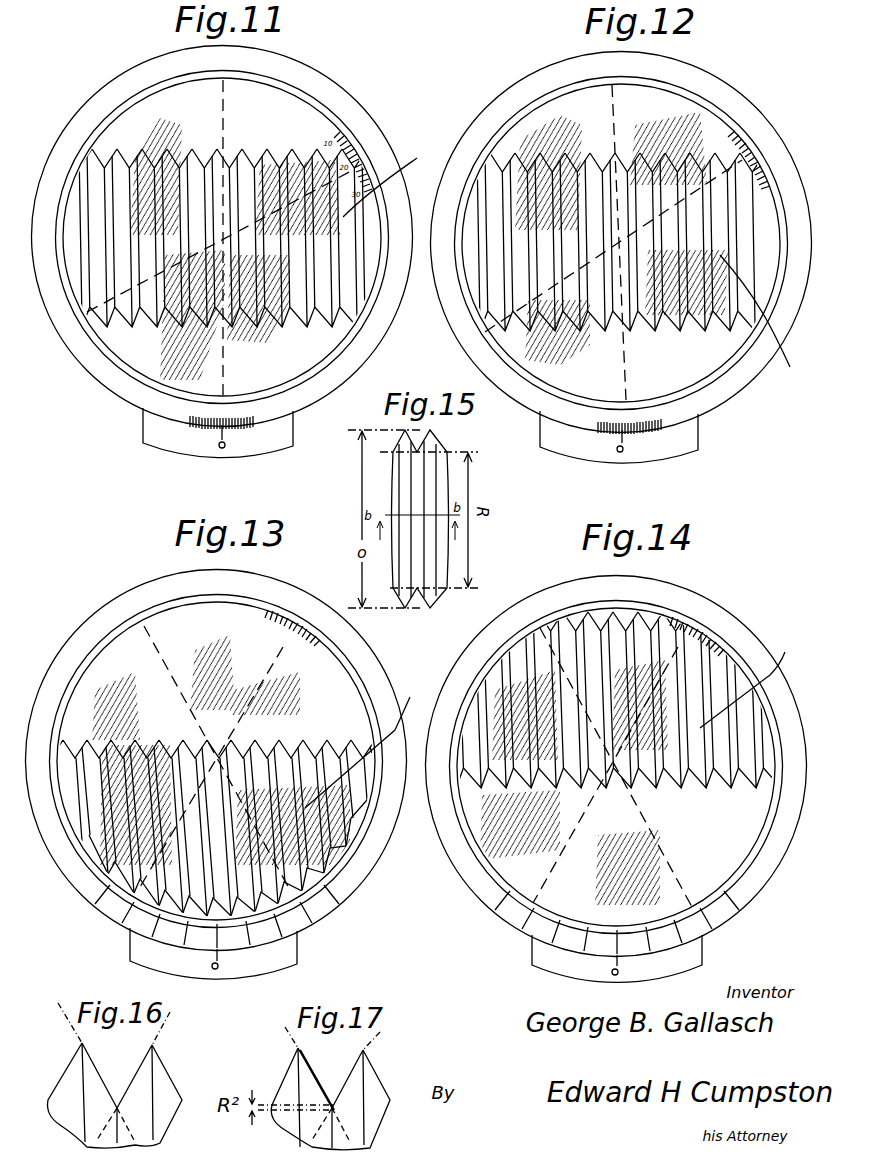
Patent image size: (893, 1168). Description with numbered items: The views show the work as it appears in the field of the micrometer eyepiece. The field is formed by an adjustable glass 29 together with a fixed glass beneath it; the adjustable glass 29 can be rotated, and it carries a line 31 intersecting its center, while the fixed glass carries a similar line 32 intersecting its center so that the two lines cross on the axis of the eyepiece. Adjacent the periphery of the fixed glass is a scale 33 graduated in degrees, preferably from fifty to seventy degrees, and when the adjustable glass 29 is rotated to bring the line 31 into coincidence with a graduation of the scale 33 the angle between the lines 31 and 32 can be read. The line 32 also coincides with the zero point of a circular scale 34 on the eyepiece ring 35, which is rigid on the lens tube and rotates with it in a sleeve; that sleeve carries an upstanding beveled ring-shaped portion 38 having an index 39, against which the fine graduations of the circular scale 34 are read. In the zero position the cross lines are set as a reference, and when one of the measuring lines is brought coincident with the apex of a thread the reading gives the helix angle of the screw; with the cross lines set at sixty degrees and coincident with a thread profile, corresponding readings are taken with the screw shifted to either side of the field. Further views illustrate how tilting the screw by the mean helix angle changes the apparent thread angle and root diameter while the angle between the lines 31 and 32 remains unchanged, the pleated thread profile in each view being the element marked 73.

In FIG. 11, the adjustable glass 29 is at (228, 249).
In FIG. 12, the adjustable glass 29 is at (614, 241).
In FIG. 13, the adjustable glass 29 is at (231, 775).
In FIG. 14, the adjustable glass 29 is at (626, 758).
In FIG. 11, the line 31 is at (322, 157).
In FIG. 12, the line 31 is at (706, 157).
In FIG. 13, the line 31 is at (277, 663).
In FIG. 14, the line 31 is at (560, 855).
In FIG. 16, the line 31 is at (176, 1029).
In FIG. 17, the line 31 is at (388, 1037).
In FIG. 11, the line 32 is at (228, 370).
In FIG. 12, the line 32 is at (622, 367).
In FIG. 13, the line 32 is at (160, 653).
In FIG. 14, the line 32 is at (652, 830).
In FIG. 16, the line 32 is at (54, 1024).
In FIG. 17, the line 32 is at (276, 1041).
In FIG. 12, the scale 33 is at (742, 158).
In FIG. 13, the scale 33 is at (320, 637).
In FIG. 14, the scale 33 is at (703, 640).
In FIG. 11, the circular scale 34 is at (258, 448).
In FIG. 12, the circular scale 34 is at (678, 452).
In FIG. 13, the circular scale 34 is at (115, 919).
In FIG. 14, the circular scale 34 is at (527, 920).
In FIG. 11, the eyepiece ring 35 is at (107, 380).
In FIG. 12, the eyepiece ring 35 is at (745, 382).
In FIG. 13, the eyepiece ring 35 is at (67, 857).
In FIG. 14, the eyepiece ring 35 is at (463, 863).
In FIG. 11, the beveled ring-shaped portion 38 is at (191, 447).
In FIG. 12, the beveled ring-shaped portion 38 is at (595, 450).
In FIG. 13, the beveled ring-shaped portion 38 is at (290, 961).
In FIG. 14, the beveled ring-shaped portion 38 is at (702, 950).
In FIG. 11, the index 39 is at (225, 442).
In FIG. 12, the index 39 is at (623, 443).
In FIG. 13, the index 39 is at (220, 961).
In FIG. 14, the index 39 is at (612, 969).
In FIG. 11, the pleat fold line 73 is at (391, 178).
In FIG. 12, the pleat fold line 73 is at (765, 321).
In FIG. 13, the pleat fold line 73 is at (366, 741).
In FIG. 14, the pleat fold line 73 is at (752, 679).
In FIG. 16, the pleat fold line 73 is at (153, 1085).
In FIG. 17, the pleat fold line 73 is at (367, 1085).